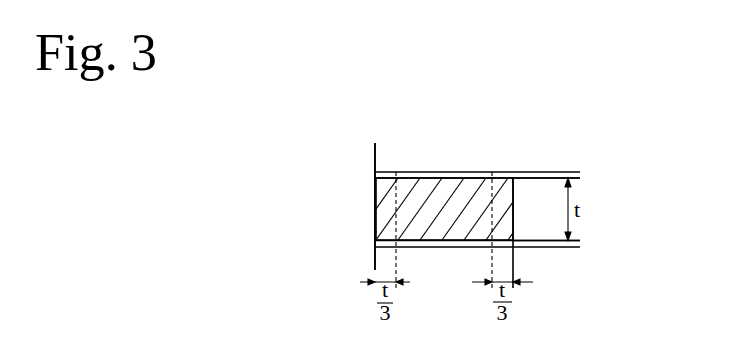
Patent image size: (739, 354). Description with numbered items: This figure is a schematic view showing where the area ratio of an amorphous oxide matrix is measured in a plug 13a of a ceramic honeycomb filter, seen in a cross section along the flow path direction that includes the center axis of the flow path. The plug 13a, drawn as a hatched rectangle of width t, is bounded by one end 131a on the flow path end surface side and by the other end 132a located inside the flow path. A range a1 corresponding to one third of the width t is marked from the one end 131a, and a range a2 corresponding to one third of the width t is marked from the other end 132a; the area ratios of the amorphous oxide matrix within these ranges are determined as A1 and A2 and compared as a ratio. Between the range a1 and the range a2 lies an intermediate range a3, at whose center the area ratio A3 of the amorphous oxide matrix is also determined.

The plug 13a is at (387, 121).
The range a1 is at (385, 182).
The range a2 is at (507, 183).
The range a3 is at (446, 182).
The one end 131a is at (375, 208).
The other end 132a is at (515, 206).